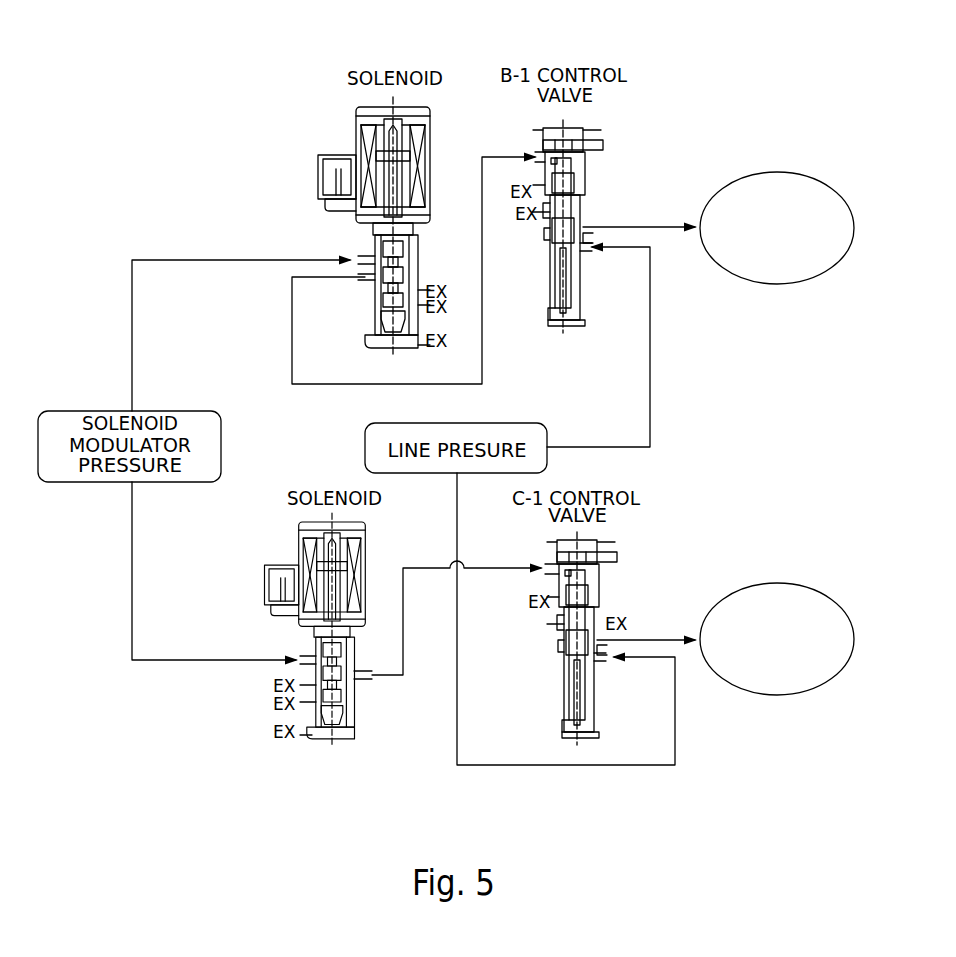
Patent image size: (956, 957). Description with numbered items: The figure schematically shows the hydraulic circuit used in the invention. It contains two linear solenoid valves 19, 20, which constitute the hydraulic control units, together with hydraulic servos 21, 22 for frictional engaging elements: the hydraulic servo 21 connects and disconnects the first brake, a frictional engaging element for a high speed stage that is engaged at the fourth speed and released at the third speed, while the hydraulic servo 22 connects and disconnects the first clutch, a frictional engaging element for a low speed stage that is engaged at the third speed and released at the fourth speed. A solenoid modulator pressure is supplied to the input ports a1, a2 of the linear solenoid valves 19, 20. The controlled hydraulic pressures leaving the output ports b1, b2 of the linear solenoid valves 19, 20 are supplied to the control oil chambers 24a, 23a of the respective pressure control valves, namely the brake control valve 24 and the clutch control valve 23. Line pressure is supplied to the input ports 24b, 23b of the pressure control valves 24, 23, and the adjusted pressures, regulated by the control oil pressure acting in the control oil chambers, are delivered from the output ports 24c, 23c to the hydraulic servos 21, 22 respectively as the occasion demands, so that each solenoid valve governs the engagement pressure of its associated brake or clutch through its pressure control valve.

The linear solenoid valve 19 is at (323, 108).
The linear solenoid valve 20 is at (273, 536).
The hydraulic servo 21 is at (768, 172).
The hydraulic servo 22 is at (787, 583).
The C-1 control valve 23 is at (632, 545).
The B-1 control valve 24 is at (630, 118).
The control oil chamber 24a is at (538, 153).
The input port 24b is at (586, 252).
The output port 24c is at (590, 225).
The control oil chamber 23a is at (553, 566).
The input port 23b is at (607, 662).
The output port 23c is at (604, 637).
The input port a1 is at (360, 255).
The output port b1 is at (362, 280).
The input port a2 is at (300, 656).
The output port b2 is at (355, 679).